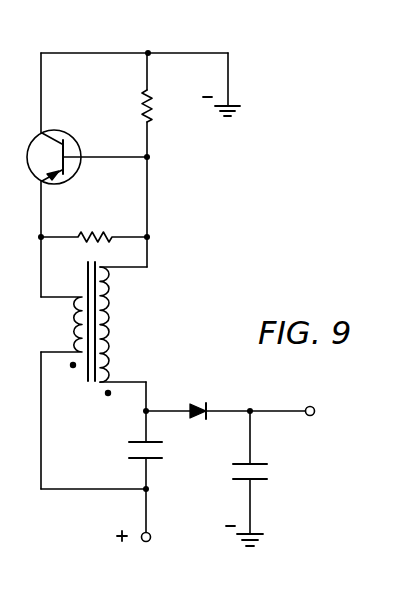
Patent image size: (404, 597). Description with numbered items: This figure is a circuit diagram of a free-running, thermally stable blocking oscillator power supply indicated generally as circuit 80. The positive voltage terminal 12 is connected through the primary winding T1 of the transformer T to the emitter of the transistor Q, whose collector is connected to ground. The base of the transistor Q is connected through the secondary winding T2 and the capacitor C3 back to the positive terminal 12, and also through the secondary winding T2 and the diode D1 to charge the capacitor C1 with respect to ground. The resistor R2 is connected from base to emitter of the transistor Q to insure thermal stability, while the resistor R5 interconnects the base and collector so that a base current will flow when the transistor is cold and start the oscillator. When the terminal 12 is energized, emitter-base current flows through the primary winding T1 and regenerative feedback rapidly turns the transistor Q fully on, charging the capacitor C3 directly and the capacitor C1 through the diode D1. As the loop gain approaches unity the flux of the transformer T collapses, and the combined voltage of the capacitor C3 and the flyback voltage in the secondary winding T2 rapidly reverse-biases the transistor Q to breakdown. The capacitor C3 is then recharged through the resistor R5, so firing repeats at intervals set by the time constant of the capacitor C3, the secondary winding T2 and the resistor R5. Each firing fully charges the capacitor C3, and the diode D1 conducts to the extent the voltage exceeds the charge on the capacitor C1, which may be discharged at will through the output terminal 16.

The blocking oscillator power supply 80 is at (196, 241).
The transistor Q is at (62, 135).
The resistor R5 is at (151, 92).
The resistor R2 is at (109, 233).
The transformer T is at (86, 277).
The primary winding T1 is at (72, 318).
The secondary winding T2 is at (112, 326).
The diode D1 is at (207, 405).
The capacitor C3 is at (128, 450).
The capacitor C1 is at (258, 471).
The output terminal 16 is at (315, 411).
The positive voltage terminal 12 is at (149, 541).